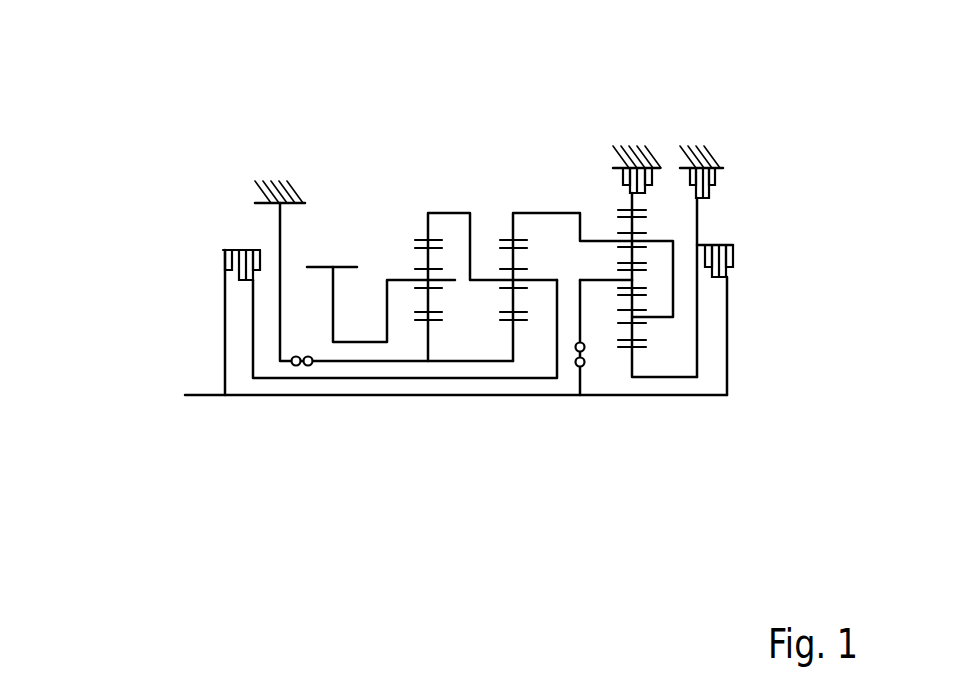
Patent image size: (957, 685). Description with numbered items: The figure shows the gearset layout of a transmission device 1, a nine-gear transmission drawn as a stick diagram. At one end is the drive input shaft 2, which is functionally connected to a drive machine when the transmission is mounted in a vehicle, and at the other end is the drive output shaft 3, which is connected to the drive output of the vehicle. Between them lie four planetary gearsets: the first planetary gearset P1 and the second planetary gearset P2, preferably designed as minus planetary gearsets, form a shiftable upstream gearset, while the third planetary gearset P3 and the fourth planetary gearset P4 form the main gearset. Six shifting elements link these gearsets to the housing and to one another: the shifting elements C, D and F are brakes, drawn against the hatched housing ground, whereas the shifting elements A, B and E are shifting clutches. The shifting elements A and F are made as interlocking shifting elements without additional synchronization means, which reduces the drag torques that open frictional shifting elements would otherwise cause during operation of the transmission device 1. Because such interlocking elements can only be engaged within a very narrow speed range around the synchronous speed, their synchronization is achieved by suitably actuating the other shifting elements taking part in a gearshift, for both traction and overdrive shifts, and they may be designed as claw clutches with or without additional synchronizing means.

The transmission device 1 is at (233, 137).
The drive input shaft 2 is at (197, 397).
The drive output shaft 3 is at (335, 312).
The shifting element E is at (222, 257).
The shifting element F is at (300, 364).
The fourth planetary gearset P4 is at (448, 295).
The third planetary gearset P3 is at (497, 258).
The shifting element A is at (580, 364).
The second planetary gearset P2 is at (613, 223).
The first planetary gearset P1 is at (650, 328).
The shifting element D is at (657, 185).
The shifting element C is at (717, 183).
The shifting element B is at (733, 263).